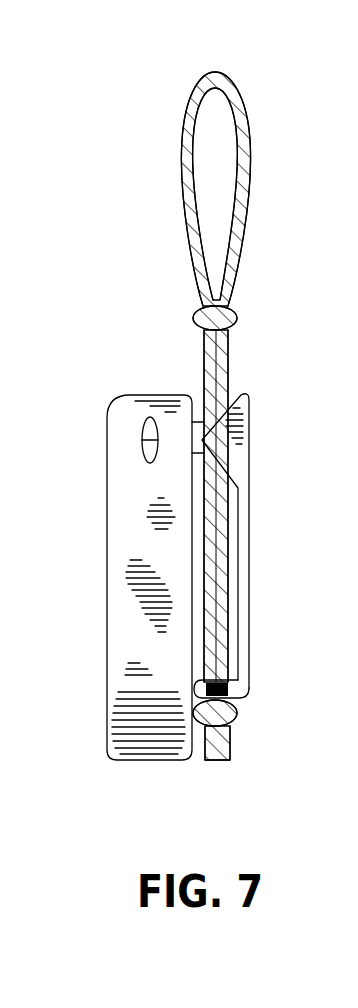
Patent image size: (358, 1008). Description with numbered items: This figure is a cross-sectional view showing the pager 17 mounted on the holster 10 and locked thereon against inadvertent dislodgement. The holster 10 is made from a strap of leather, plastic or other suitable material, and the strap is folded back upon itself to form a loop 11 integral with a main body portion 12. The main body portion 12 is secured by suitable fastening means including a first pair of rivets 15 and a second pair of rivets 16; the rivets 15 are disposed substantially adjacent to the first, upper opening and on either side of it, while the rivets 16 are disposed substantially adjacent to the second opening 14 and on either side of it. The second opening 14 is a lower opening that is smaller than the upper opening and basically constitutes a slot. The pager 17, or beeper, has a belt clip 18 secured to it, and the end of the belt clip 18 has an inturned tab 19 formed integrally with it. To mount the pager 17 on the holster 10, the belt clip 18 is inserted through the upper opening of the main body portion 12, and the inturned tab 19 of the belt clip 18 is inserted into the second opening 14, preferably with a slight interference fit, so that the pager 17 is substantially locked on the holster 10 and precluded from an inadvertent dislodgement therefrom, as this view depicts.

The holster 10 is at (235, 358).
The loop 11 is at (196, 147).
The main body portion 12 is at (232, 750).
The second opening 14 is at (250, 685).
The first pair of rivets 15 is at (237, 314).
The second pair of rivets 16 is at (237, 716).
The pager 17 is at (118, 538).
The belt clip 18 is at (249, 528).
The inturned tab 19 is at (192, 686).